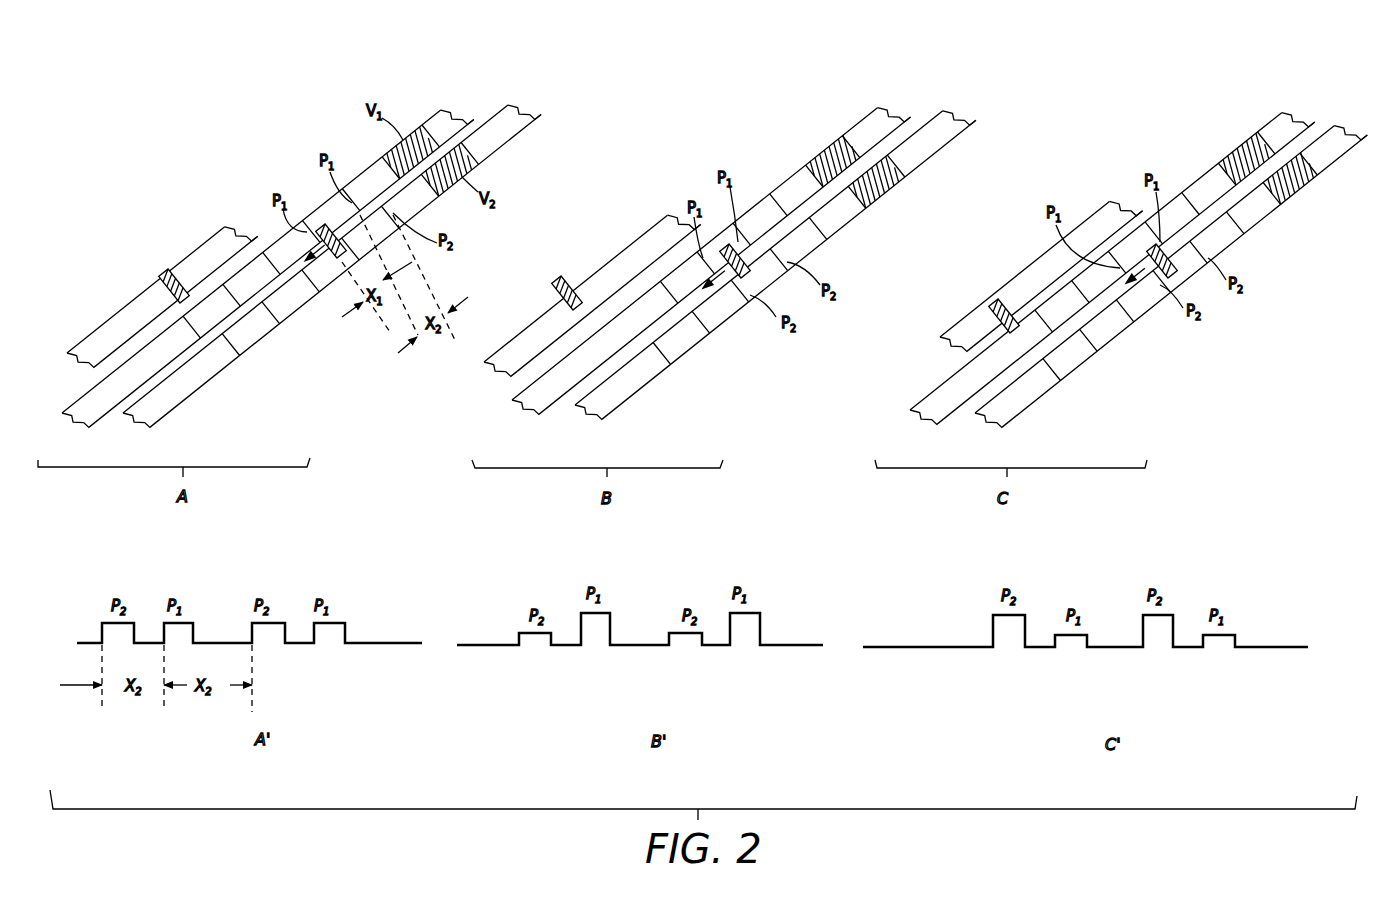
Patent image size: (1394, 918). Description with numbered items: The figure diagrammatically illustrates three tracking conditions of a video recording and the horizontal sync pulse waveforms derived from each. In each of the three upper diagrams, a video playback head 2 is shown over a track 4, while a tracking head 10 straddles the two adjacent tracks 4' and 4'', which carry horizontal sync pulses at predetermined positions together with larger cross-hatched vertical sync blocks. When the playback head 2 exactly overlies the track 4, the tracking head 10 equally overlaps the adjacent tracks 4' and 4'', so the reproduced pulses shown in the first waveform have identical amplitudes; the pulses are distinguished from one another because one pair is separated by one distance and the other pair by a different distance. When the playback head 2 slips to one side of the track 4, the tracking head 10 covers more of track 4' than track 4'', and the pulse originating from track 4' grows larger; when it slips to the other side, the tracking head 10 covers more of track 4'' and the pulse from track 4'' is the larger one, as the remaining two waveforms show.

The video playback head 2 is at (170, 273).
The track 4 is at (605, 269).
The adjacent track 4' is at (692, 257).
The adjacent track 4'' is at (745, 257).
The tracking head 10 is at (318, 228).